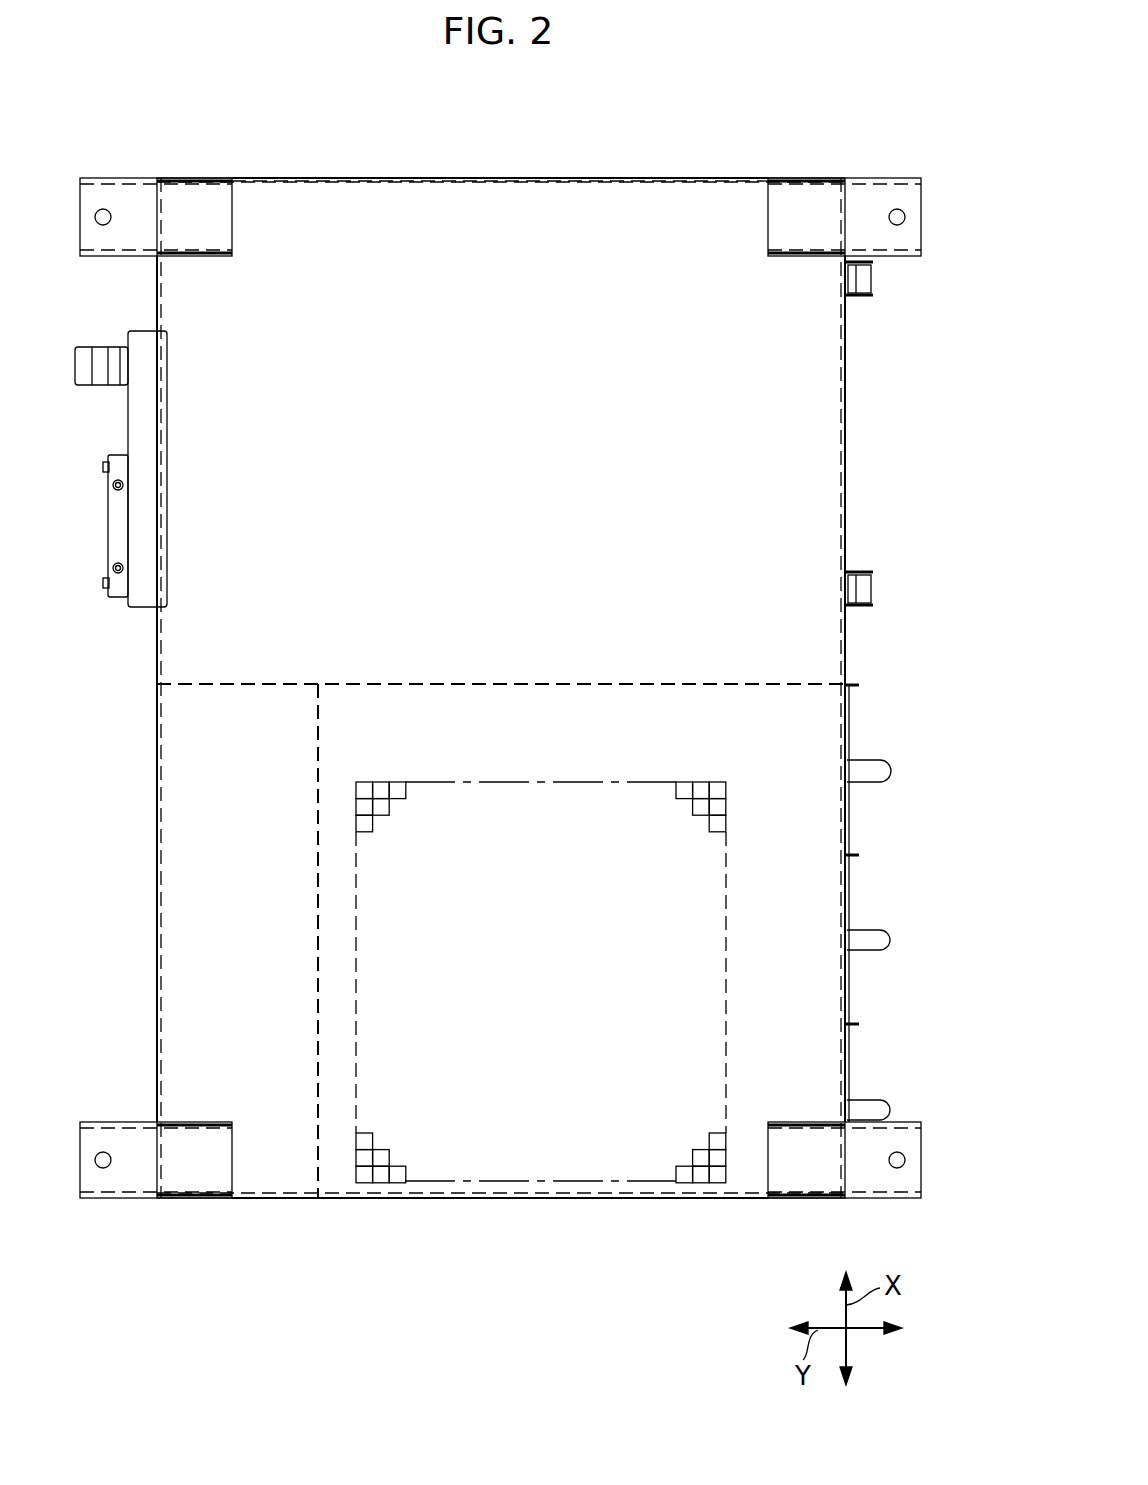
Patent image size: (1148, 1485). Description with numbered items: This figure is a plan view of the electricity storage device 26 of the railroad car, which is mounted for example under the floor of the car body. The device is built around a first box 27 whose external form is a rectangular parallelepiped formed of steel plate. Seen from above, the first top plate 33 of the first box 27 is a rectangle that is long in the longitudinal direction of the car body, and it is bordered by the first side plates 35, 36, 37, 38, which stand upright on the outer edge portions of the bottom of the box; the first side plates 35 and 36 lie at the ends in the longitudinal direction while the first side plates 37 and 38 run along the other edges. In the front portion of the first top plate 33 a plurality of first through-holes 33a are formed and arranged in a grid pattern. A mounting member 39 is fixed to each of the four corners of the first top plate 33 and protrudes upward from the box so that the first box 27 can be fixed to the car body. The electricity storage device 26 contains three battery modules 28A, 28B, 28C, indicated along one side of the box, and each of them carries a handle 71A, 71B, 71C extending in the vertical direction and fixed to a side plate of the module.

The electricity storage device 26 is at (222, 122).
The first box 27 is at (637, 162).
The first top plate 33 is at (820, 420).
The first through-holes 33a is at (400, 1175).
The first side plate 35 is at (845, 497).
The first side plate 36 is at (157, 648).
The first side plate 37 is at (340, 1200).
The first side plate 38 is at (357, 178).
The mounting member 39 is at (122, 190).
The battery module 28A is at (858, 1079).
The battery module 28B is at (858, 909).
The battery module 28C is at (858, 742).
The handle 71A is at (875, 1105).
The handle 71B is at (875, 935).
The handle 71C is at (875, 768).